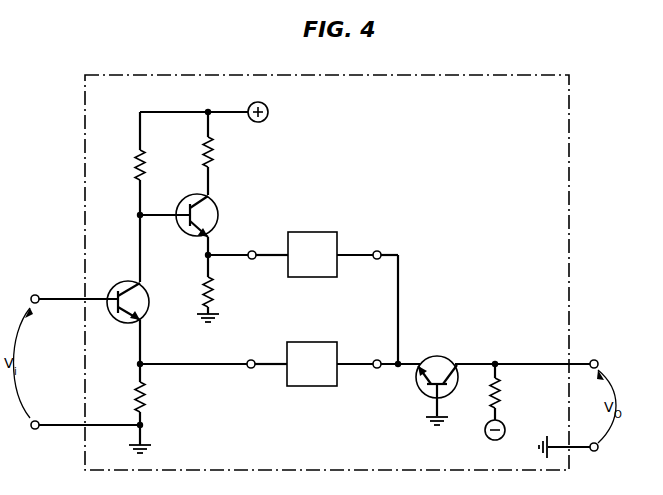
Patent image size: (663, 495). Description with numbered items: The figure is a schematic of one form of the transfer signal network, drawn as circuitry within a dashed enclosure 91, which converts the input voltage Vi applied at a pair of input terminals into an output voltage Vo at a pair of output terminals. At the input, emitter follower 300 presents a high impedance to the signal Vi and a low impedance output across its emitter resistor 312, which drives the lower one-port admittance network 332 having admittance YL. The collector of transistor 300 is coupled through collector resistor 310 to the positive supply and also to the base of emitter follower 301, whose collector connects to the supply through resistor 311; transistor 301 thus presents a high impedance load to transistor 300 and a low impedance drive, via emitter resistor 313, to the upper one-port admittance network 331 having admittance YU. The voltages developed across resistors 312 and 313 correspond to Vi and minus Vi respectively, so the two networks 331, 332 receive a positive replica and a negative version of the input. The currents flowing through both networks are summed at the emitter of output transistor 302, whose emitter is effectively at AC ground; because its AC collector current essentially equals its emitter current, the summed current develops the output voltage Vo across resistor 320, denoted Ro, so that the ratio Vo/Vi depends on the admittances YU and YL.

The amplifier circuit enclosure 91 is at (552, 167).
The emitter follower 300 is at (125, 292).
The emitter follower 301 is at (212, 215).
The transistor 302 is at (437, 367).
The resistor 310 is at (127, 165).
The resistor 311 is at (224, 152).
The emitter resistor 312 is at (155, 397).
The emitter resistor 313 is at (224, 295).
The resistor 320 is at (499, 393).
The one-port admittance network 331 is at (314, 232).
The one-port admittance network 332 is at (307, 386).